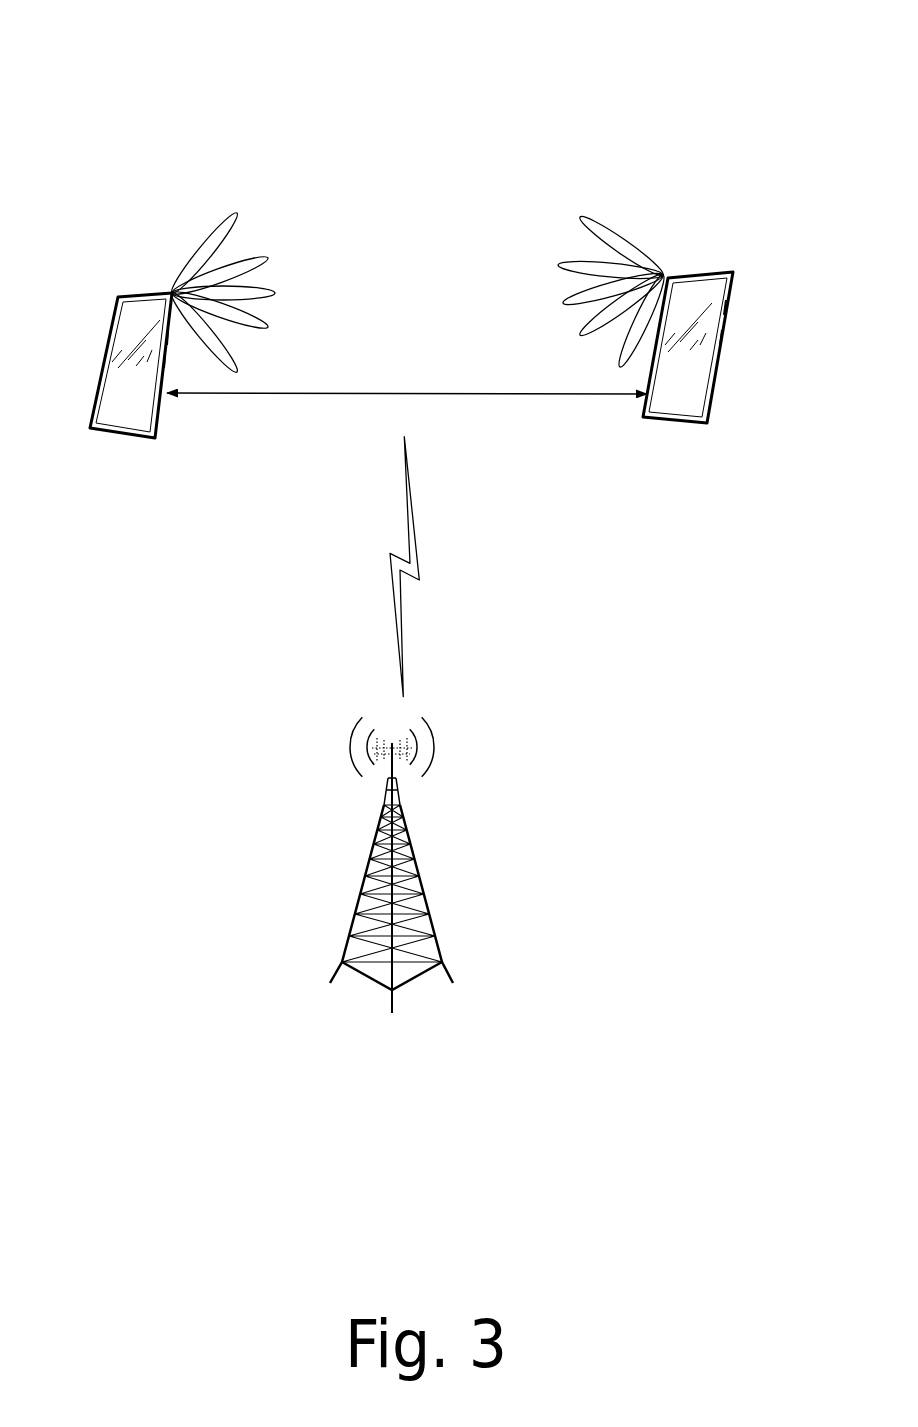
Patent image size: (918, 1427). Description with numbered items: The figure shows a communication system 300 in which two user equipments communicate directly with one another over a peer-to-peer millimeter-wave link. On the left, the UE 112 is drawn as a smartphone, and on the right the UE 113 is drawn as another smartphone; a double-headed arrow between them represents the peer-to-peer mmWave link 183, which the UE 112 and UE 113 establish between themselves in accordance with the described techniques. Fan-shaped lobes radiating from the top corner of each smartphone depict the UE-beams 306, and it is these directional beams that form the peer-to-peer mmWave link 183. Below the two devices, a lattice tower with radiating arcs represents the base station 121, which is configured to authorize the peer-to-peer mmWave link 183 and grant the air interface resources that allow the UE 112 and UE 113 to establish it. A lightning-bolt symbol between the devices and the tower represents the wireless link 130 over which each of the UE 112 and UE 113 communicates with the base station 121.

The communication system 300 is at (125, 35).
The user equipment 112 is at (118, 298).
The user equipment 113 is at (733, 272).
The UE-beams 306 is at (275, 213).
The peer-to-peer mmWave link 183 is at (390, 393).
The wireless link 130 is at (390, 552).
The base station 121 is at (362, 900).